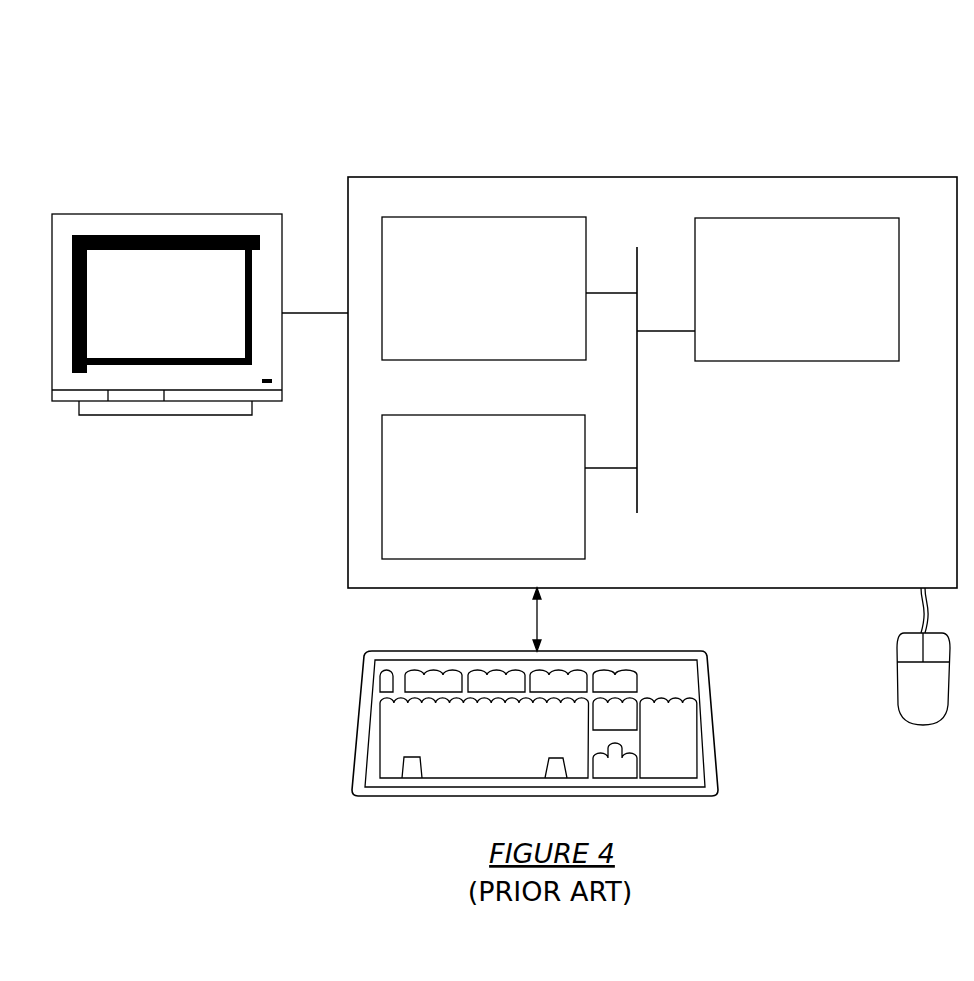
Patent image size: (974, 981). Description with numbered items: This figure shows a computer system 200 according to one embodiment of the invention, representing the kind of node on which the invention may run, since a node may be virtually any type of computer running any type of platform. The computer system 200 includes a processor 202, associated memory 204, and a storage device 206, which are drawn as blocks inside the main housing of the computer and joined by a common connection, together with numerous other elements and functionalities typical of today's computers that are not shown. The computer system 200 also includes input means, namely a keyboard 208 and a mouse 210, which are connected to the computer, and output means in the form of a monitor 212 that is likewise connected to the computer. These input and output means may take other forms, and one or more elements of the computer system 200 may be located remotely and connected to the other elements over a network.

The computer system 200 is at (842, 70).
The processor 202 is at (797, 289).
The memory 204 is at (484, 288).
The storage device 206 is at (483, 487).
The keyboard 208 is at (535, 723).
The mouse 210 is at (923, 679).
The monitor 212 is at (167, 314).